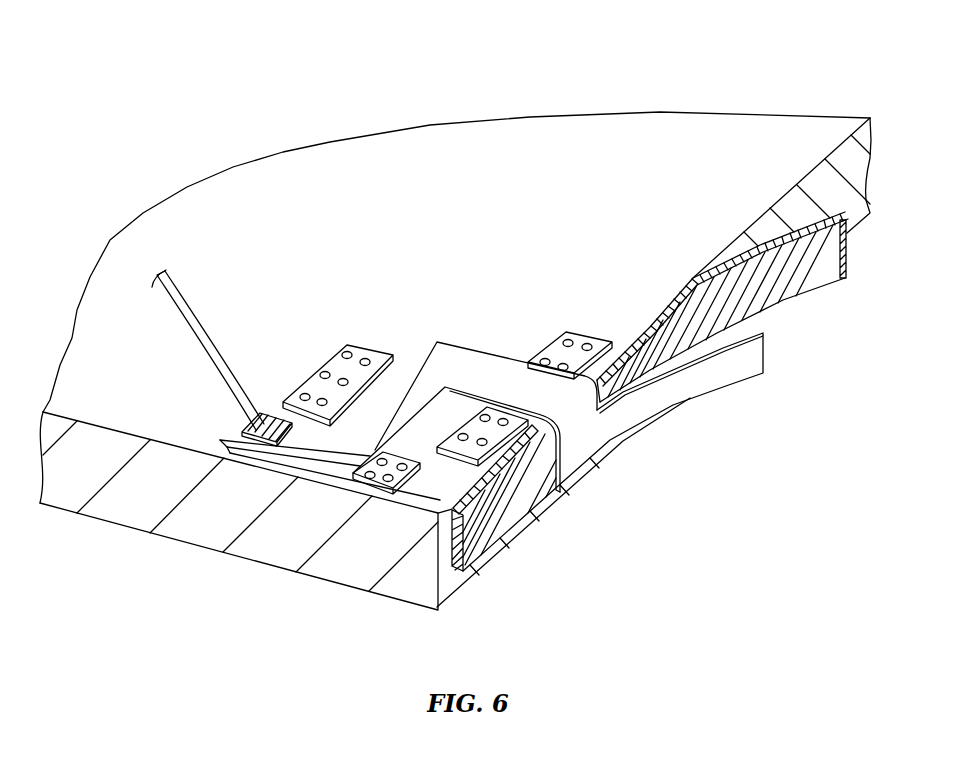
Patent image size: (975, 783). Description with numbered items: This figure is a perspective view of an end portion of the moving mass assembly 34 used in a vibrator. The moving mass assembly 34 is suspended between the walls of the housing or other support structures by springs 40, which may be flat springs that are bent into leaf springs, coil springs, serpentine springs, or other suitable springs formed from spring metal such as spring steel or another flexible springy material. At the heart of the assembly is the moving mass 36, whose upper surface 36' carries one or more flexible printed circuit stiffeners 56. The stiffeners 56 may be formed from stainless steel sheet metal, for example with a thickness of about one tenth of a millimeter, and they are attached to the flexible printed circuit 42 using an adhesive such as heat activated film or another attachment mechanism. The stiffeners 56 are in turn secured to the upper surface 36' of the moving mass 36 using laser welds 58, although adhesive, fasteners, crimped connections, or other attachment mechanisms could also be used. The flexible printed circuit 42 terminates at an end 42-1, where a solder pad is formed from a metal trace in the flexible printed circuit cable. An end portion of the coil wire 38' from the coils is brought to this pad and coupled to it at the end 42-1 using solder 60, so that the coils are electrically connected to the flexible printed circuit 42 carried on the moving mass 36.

The moving mass assembly 34 is at (631, 92).
The moving mass 36 is at (455, 379).
The upper surface 36' is at (240, 506).
The coil wire 38' is at (208, 350).
The springs 40 is at (824, 284).
The flexible printed circuit 42 is at (716, 390).
The end 42-1 is at (312, 448).
The stiffeners 56 is at (362, 342).
The laser welds 58 is at (347, 352).
The solder 60 is at (242, 432).